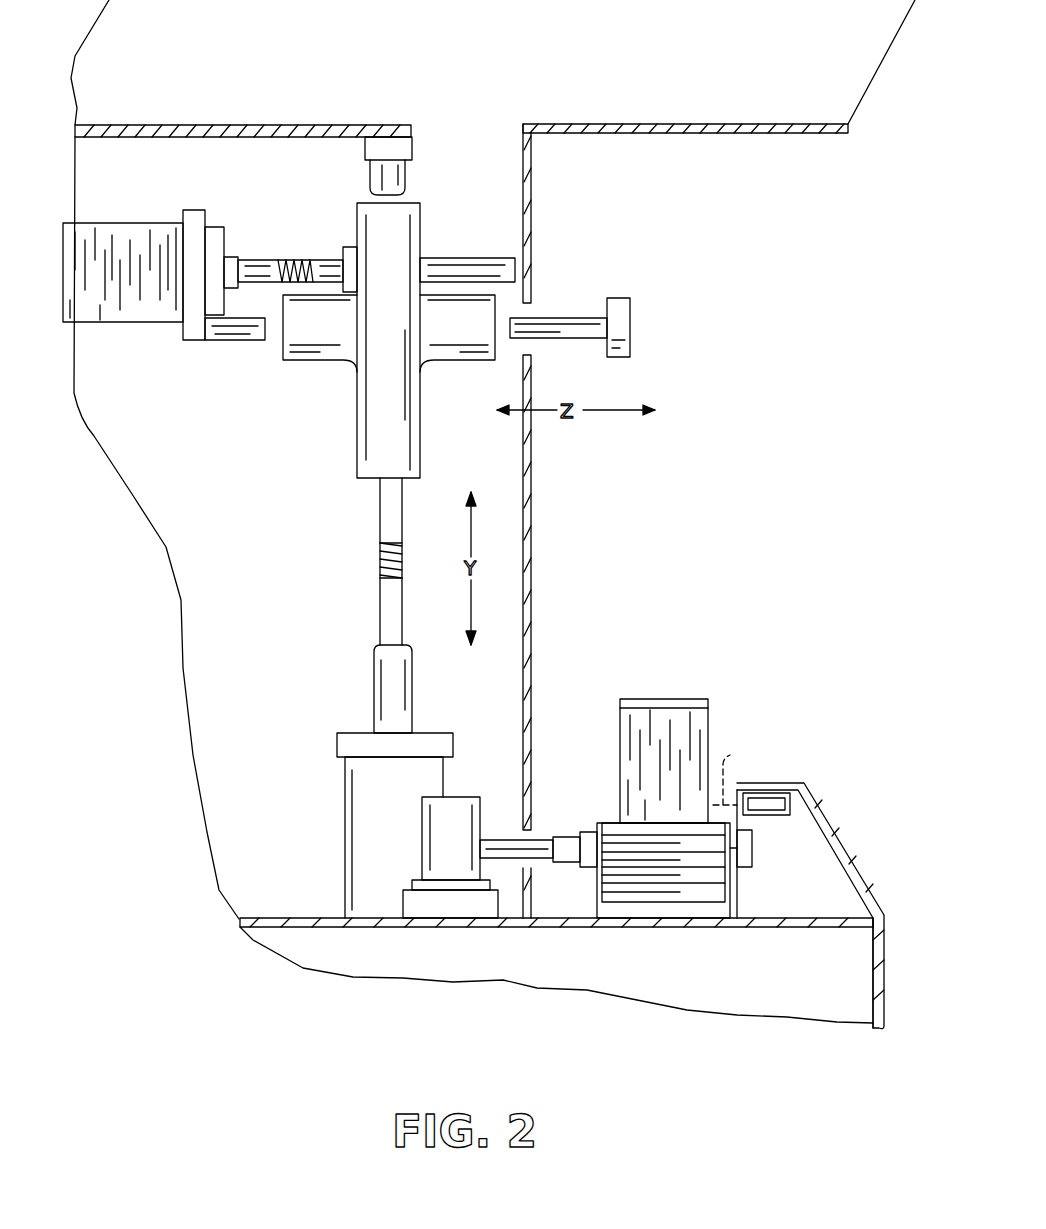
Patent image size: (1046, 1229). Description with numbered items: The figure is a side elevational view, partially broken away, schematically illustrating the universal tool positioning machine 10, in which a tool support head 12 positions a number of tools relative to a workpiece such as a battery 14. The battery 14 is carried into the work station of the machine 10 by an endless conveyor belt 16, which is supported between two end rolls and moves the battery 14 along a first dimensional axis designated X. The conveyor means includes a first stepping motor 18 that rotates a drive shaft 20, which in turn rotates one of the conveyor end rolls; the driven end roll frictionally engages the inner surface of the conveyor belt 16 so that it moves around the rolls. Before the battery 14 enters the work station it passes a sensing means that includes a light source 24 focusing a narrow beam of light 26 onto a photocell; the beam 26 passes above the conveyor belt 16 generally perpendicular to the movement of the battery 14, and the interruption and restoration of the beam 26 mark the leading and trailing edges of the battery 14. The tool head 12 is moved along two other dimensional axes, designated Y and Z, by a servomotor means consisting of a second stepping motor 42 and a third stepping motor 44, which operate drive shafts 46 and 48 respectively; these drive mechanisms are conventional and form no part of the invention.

The universal tool positioning machine 10 is at (563, 577).
The tool support head 12 is at (613, 310).
The battery 14 is at (695, 737).
The conveyor belt 16 is at (690, 892).
The first stepping motor 18 is at (450, 815).
The drive shaft 20 is at (532, 847).
The light source 24 is at (780, 807).
The beam of light 26 is at (737, 773).
The second stepping motor 42 is at (368, 785).
The third stepping motor 44 is at (128, 243).
The drive shaft 46 is at (393, 600).
The drive shaft 48 is at (253, 272).